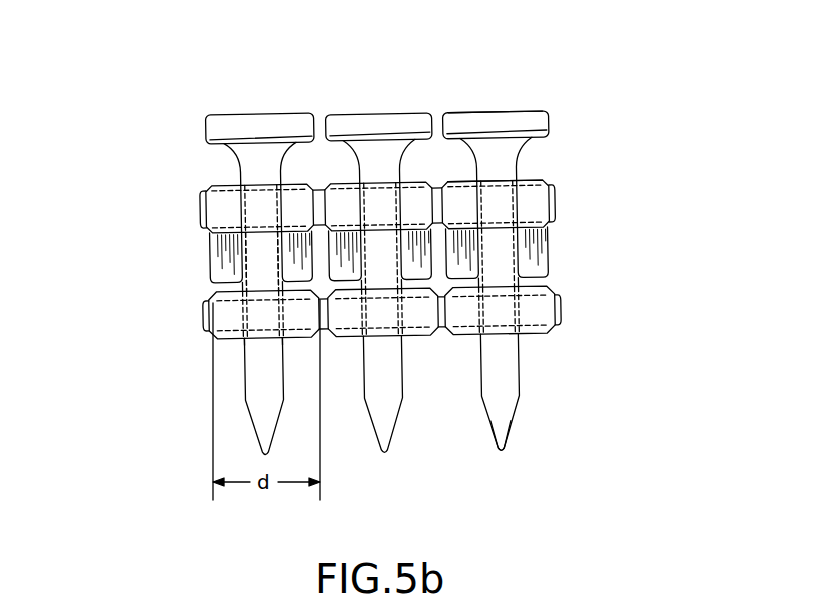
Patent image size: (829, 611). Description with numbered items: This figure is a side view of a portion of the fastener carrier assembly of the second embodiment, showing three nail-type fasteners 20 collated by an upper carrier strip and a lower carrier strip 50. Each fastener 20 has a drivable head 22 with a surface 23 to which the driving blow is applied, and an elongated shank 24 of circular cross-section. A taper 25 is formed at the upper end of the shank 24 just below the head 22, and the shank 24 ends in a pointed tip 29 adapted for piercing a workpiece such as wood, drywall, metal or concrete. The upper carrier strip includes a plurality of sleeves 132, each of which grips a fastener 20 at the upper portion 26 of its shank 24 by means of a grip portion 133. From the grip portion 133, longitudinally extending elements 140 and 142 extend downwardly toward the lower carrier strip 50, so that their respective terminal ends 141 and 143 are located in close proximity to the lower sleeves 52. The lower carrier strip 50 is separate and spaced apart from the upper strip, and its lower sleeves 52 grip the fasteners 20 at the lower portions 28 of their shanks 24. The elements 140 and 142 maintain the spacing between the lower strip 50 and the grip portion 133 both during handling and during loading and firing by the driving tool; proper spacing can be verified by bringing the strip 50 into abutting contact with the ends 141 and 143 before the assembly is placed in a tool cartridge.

The fastener 20 is at (459, 227).
The drivable head 22 is at (552, 123).
The head surface 23 is at (523, 111).
The elongated shank 24 is at (517, 263).
The taper 25 is at (530, 143).
The upper portion of shank 26 is at (518, 175).
The lower portion of shank 28 is at (523, 369).
The pointed tip 29 is at (505, 433).
The lower carrier strip 50 is at (318, 363).
The lower sleeve 52 is at (227, 325).
The sleeve 132 is at (360, 213).
The grip portion 133 is at (227, 193).
The longitudinally extending element 140 is at (225, 267).
The terminal end 141 is at (225, 292).
The longitudinally extending element 142 is at (302, 243).
The terminal end 143 is at (287, 285).